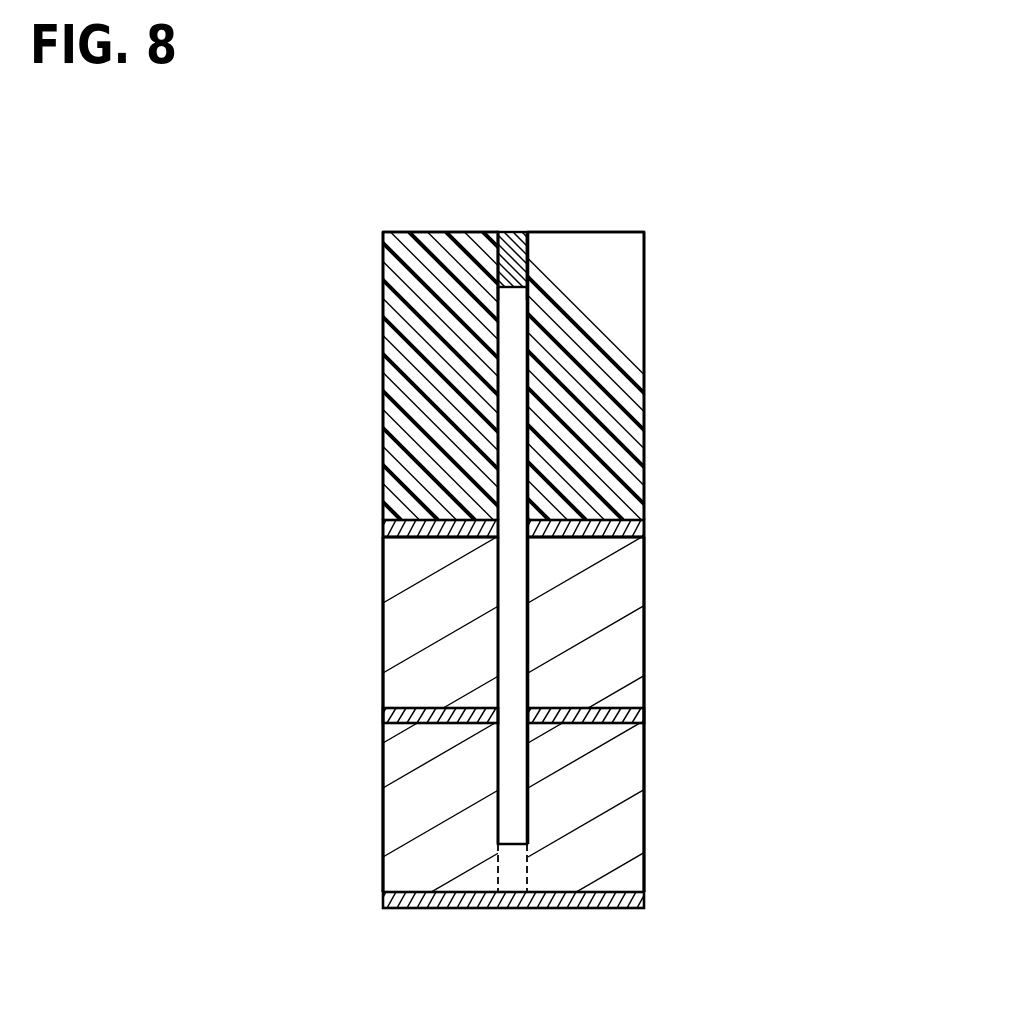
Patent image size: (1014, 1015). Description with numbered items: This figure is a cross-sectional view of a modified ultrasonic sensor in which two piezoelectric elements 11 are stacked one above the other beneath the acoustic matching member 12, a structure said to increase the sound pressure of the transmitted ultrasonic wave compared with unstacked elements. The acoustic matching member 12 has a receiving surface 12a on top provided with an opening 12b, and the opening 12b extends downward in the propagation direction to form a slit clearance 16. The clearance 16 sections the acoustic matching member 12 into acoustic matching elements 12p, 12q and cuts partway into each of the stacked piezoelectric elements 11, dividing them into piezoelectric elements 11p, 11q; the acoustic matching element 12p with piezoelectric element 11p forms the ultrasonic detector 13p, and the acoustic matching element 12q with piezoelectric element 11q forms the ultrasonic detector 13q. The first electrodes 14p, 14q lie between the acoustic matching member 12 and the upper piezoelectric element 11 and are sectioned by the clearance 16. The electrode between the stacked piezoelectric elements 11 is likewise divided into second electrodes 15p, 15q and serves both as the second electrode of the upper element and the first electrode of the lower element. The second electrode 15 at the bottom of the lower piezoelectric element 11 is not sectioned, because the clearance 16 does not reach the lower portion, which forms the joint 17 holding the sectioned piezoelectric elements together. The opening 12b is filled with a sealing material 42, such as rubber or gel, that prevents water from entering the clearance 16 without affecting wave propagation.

The piezoelectric element 11 is at (645, 680).
The piezoelectric element 11p is at (383, 549).
The piezoelectric element 11q is at (645, 540).
The acoustic matching member 12 is at (645, 348).
The receiving surface 12a is at (412, 232).
The opening 12b is at (527, 232).
The acoustic matching element 12p is at (383, 477).
The acoustic matching element 12q is at (645, 468).
The ultrasonic detector 13p is at (222, 470).
The ultrasonic detector 13q is at (781, 453).
The first electrode 14p is at (447, 538).
The first electrode 14q is at (596, 538).
The second electrode 15 is at (383, 897).
The second electrode 15p is at (383, 713).
The second electrode 15q is at (645, 720).
The clearance 16 is at (528, 372).
The joint 17 is at (508, 865).
The sealing material 42 is at (503, 232).